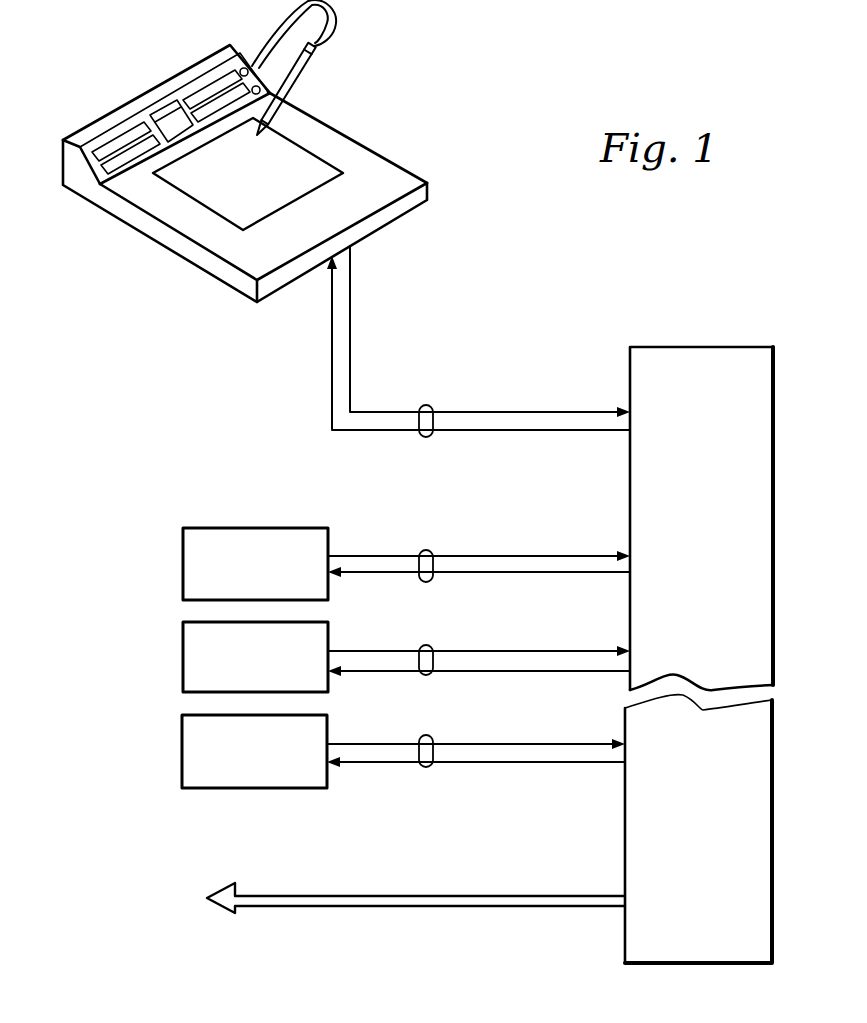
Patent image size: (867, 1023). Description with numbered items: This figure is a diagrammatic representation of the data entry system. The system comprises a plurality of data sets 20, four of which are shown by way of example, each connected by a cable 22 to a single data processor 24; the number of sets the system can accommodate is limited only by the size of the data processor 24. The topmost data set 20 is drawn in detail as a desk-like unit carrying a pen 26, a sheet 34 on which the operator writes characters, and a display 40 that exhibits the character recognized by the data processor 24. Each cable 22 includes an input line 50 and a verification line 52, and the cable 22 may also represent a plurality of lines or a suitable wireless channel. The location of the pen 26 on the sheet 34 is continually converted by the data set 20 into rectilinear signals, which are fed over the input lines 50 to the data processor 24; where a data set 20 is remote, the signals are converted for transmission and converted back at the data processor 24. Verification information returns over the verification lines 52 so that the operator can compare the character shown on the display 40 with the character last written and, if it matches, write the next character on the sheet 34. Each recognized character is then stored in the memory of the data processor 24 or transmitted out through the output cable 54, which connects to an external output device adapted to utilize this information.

The data set 20 is at (167, 254).
The cable 22 is at (443, 390).
The data processor 24 is at (678, 355).
The pen 26 is at (296, 79).
The sheet 34 is at (287, 197).
The display 40 is at (180, 103).
The input line 50 is at (567, 412).
The verification line 52 is at (605, 437).
The output cable 54 is at (443, 908).